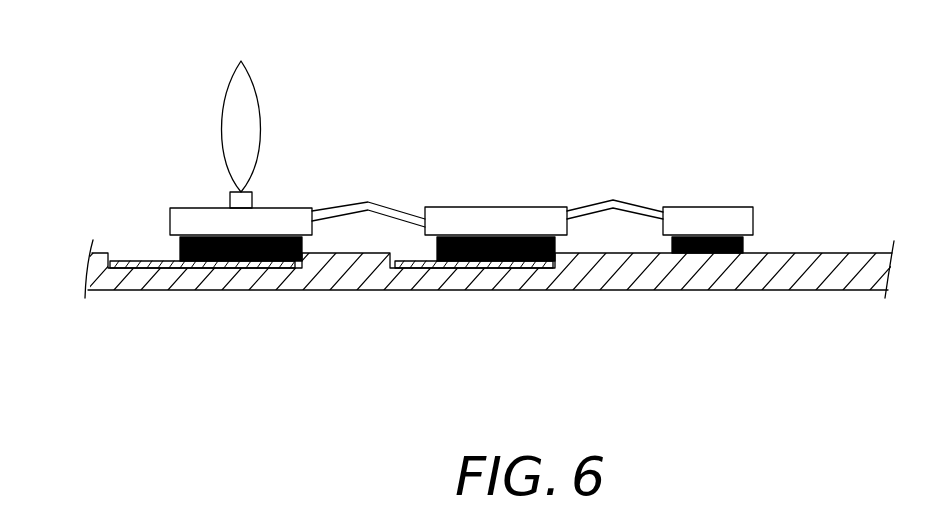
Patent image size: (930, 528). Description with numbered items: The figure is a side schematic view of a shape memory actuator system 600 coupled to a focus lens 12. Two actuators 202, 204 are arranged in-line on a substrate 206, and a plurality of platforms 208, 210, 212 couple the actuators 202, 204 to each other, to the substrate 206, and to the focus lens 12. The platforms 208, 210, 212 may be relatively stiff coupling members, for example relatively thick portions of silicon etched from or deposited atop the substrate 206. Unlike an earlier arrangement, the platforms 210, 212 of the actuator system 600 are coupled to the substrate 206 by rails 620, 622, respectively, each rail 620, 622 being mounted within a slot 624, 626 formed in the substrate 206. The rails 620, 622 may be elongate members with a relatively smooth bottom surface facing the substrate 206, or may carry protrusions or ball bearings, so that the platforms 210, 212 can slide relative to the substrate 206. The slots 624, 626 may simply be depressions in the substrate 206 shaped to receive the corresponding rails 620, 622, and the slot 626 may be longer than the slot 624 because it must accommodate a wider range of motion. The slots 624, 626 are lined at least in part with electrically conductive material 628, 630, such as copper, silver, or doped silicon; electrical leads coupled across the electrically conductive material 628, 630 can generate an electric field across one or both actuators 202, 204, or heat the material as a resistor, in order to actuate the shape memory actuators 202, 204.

The actuator system 600 is at (566, 84).
The focus lens 12 is at (245, 78).
The slot 626 is at (144, 240).
The rail 622 is at (180, 248).
The platform 212 is at (275, 206).
The slot 624 is at (400, 237).
The actuator 204 is at (397, 205).
The rail 620 is at (433, 243).
The platform 210 is at (497, 207).
The actuator 202 is at (628, 202).
The platform 208 is at (708, 207).
The substrate 206 is at (700, 288).
The electrically conductive material 630 is at (200, 263).
The electrically conductive material 628 is at (470, 263).